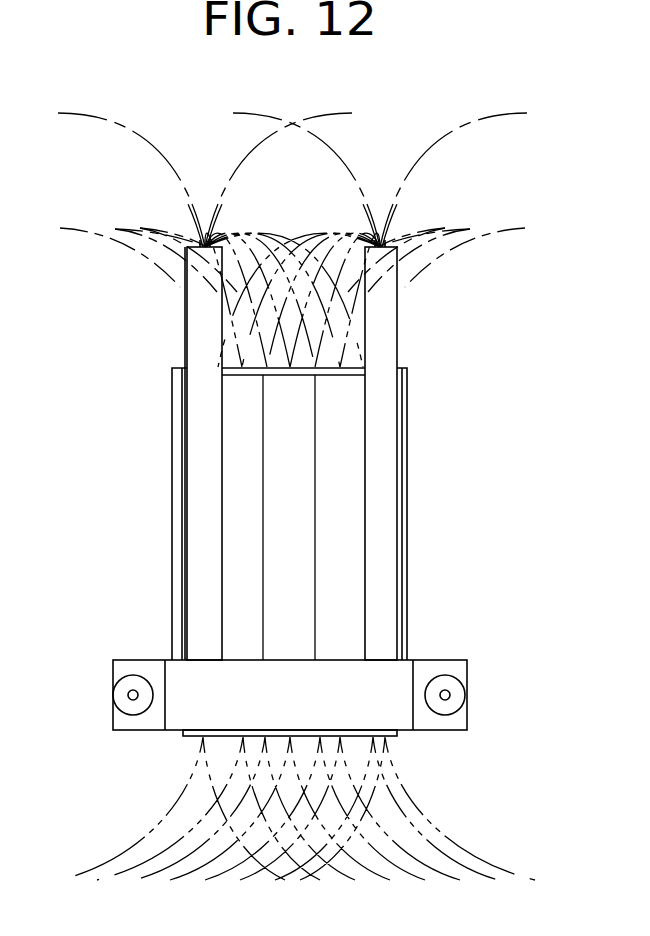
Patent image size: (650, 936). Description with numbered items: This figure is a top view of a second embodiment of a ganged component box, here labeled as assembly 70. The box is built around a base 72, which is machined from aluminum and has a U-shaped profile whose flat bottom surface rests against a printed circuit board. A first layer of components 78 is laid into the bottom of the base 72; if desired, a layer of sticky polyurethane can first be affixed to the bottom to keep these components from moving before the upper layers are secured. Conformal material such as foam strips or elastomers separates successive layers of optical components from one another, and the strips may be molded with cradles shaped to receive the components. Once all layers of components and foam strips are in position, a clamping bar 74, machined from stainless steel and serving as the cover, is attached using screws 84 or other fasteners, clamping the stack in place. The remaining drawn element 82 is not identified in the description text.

The spray assembly 70 is at (78, 458).
The base 72 is at (407, 577).
The clamping bar 74 is at (405, 673).
The first layer of components 78 is at (397, 325).
The nozzle tube 82 is at (347, 503).
The screws 84 is at (467, 690).